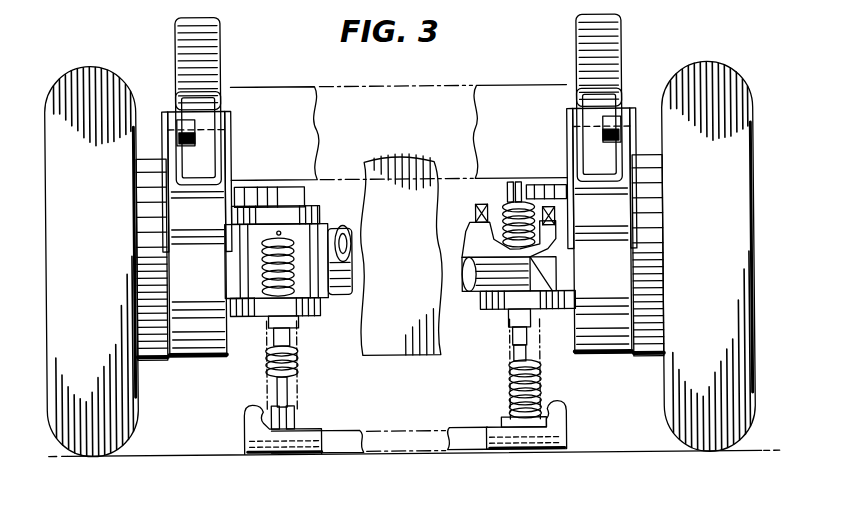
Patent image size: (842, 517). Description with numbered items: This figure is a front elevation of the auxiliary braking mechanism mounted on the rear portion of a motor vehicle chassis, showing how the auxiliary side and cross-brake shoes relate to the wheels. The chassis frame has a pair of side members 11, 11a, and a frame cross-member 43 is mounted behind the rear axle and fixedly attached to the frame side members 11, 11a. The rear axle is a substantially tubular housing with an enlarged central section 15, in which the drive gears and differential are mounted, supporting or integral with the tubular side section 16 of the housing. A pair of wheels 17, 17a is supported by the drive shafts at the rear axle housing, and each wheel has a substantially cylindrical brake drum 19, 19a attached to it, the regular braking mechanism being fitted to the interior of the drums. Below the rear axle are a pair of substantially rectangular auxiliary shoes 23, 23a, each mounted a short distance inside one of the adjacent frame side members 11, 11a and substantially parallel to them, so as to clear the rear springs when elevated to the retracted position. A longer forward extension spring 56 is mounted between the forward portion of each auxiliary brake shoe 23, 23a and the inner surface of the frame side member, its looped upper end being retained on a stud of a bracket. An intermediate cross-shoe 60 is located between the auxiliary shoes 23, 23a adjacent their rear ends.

The frame side member 11 is at (222, 104).
The frame side member 11a is at (575, 98).
The enlarged central section 15 is at (440, 350).
The tubular side section 16 is at (343, 296).
The wheel 17 is at (98, 460).
The wheel 17a is at (698, 450).
The brake drum 19 is at (163, 362).
The brake drum 19a is at (650, 358).
The auxiliary shoe 23 is at (242, 440).
The auxiliary shoe 23a is at (562, 421).
The frame cross-member 43 is at (268, 92).
The forward extension spring 56 is at (264, 362).
The cross-shoe 60 is at (472, 440).